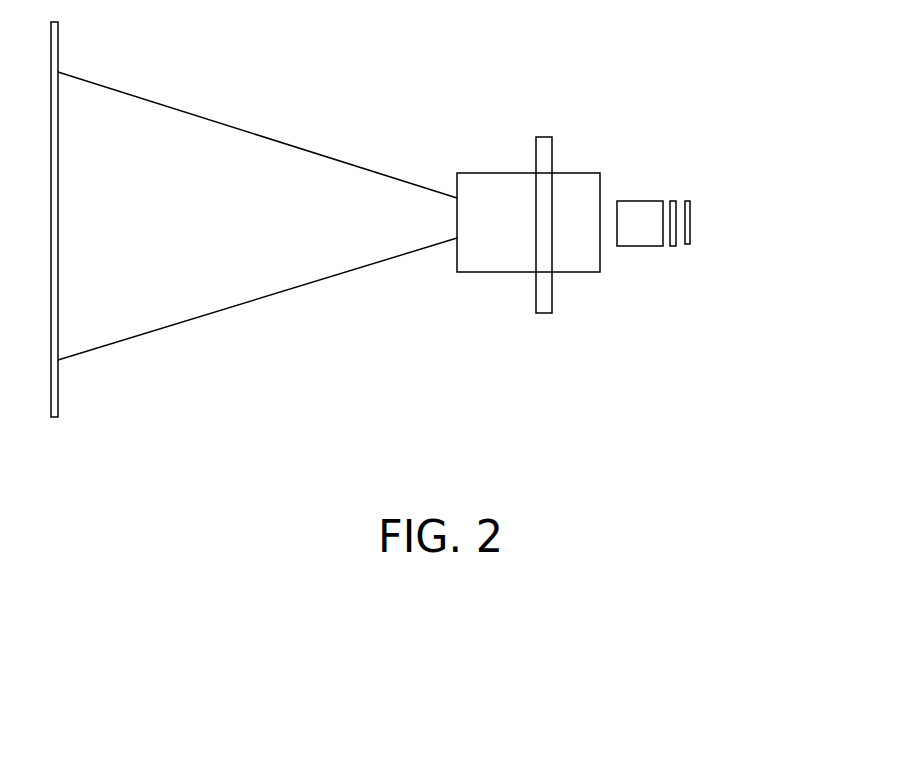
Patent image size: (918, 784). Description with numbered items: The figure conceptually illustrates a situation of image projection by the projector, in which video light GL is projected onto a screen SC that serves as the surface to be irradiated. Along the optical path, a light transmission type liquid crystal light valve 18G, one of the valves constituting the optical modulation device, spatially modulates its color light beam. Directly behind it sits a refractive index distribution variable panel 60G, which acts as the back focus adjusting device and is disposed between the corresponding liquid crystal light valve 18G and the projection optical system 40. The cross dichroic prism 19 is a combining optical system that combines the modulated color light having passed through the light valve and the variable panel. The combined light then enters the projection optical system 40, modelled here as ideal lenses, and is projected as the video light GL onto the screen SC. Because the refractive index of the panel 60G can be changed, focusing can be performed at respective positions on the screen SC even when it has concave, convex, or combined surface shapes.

The screen SC is at (57, 60).
The video light GL is at (272, 162).
The projection optical system 40 is at (519, 257).
The cross dichroic prism 19 is at (641, 238).
The refractive index distribution variable panel 60G is at (672, 200).
The liquid crystal light valve 18G is at (688, 247).